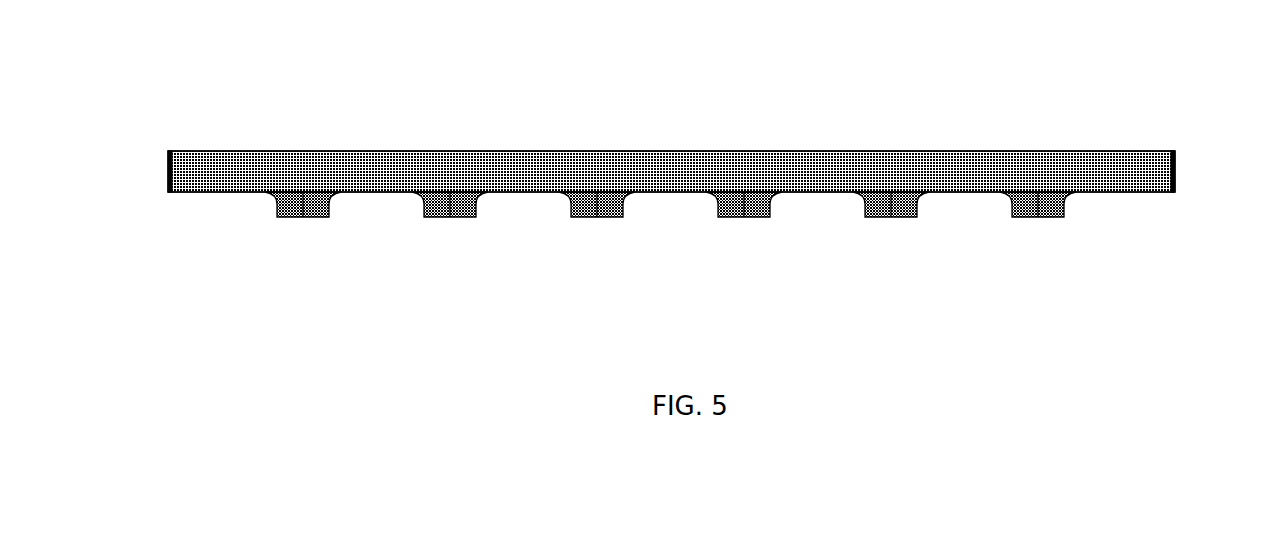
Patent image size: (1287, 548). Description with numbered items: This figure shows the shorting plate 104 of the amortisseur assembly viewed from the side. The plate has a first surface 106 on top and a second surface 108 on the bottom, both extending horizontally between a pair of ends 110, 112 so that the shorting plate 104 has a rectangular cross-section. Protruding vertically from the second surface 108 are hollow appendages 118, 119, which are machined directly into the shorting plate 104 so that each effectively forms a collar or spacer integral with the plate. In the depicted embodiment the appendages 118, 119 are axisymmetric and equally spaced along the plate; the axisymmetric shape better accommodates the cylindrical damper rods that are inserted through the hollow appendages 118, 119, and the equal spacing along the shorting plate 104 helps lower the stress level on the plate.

The shorting plate 104 is at (246, 65).
The first surface 106 is at (1168, 139).
The second surface 108 is at (1163, 204).
The end 110 is at (151, 172).
The end 112 is at (1190, 175).
The hollow appendage 118 is at (422, 240).
The hollow appendage 119 is at (286, 235).